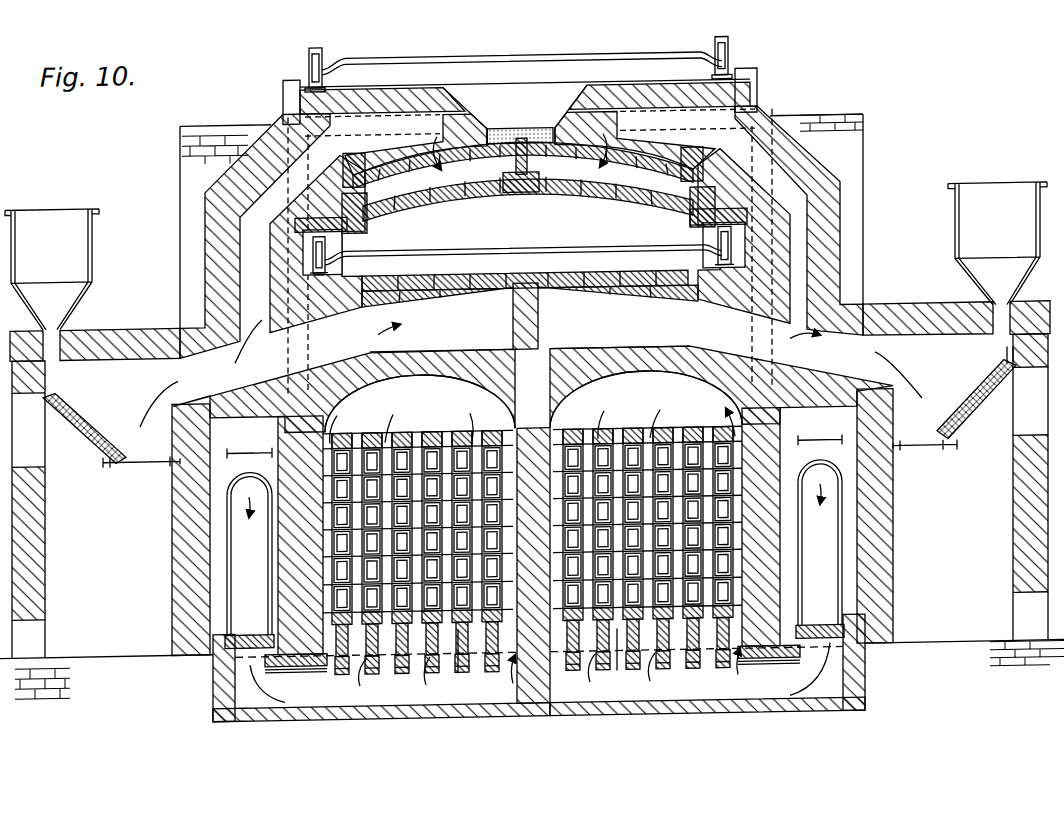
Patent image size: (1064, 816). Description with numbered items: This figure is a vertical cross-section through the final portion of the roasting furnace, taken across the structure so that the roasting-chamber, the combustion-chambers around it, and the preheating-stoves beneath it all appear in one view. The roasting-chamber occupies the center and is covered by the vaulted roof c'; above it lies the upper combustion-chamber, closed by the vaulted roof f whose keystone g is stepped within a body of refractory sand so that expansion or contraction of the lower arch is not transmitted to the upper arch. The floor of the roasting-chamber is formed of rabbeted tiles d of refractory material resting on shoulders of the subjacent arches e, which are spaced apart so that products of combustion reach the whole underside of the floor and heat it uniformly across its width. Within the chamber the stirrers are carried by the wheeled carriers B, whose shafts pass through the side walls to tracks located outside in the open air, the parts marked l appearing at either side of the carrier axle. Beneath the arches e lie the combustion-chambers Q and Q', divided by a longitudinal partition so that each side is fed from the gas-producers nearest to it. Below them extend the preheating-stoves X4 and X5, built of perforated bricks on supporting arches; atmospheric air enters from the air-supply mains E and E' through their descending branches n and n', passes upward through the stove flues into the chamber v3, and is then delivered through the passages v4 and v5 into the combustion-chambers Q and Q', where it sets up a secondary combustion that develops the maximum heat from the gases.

The vaulted roof of the upper combustion-chamber f is at (527, 128).
The keystone g is at (516, 160).
The inner arch c' is at (528, 204).
The bearing posts l is at (345, 247).
The wheeled carriers B is at (523, 243).
The floor tiles d is at (525, 271).
The subjacent arches e is at (416, 294).
The combustion-chamber Q is at (441, 333).
The combustion-chamber Q' is at (620, 327).
The chamber v3 is at (533, 406).
The opening or passage v4 is at (856, 365).
The opening or passage v5 is at (270, 372).
The air-supply main E is at (198, 484).
The air-supply main E' is at (866, 468).
The descending branch n is at (249, 572).
The descending branch n' is at (820, 559).
The preheating-stove X4 is at (492, 692).
The preheating-stove X5 is at (652, 688).